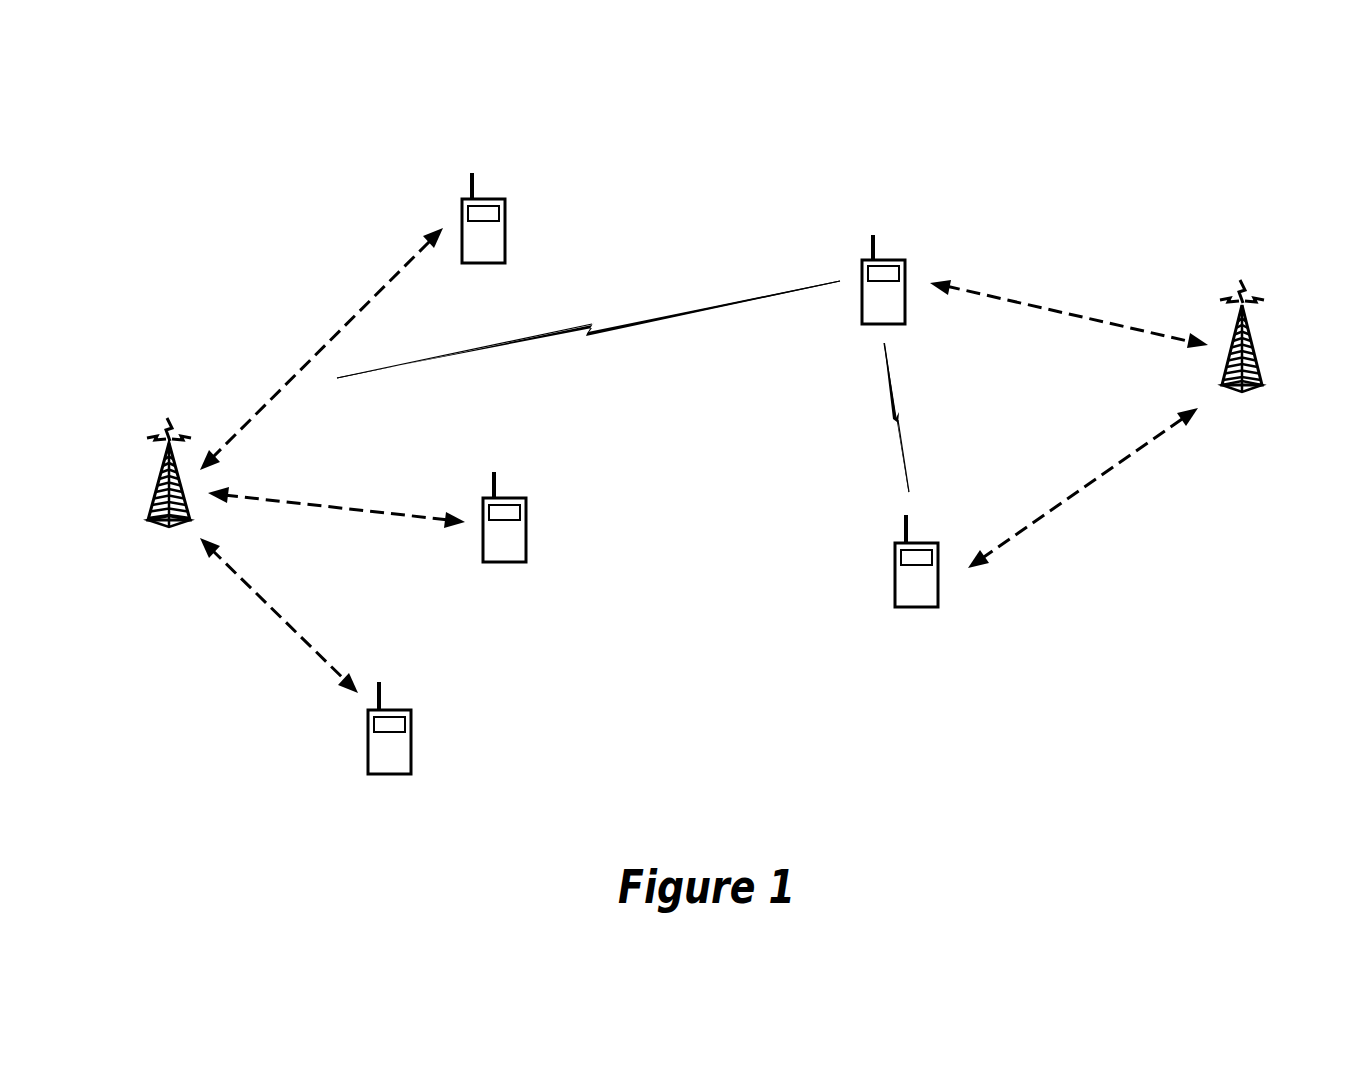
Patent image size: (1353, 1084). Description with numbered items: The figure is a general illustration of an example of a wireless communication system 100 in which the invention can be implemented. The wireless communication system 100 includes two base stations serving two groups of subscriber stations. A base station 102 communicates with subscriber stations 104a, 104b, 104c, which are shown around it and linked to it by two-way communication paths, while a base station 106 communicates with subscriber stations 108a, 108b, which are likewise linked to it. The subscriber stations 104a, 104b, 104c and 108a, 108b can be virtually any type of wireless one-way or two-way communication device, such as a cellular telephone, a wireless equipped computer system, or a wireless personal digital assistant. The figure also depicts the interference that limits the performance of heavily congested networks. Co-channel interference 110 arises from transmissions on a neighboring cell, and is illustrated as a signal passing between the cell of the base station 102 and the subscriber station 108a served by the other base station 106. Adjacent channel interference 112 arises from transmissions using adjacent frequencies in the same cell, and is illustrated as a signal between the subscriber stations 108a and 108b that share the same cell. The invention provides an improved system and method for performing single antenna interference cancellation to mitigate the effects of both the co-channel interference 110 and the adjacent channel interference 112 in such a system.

The wireless communication system 100 is at (220, 166).
The base station 102 is at (146, 516).
The subscriber station 104a is at (505, 238).
The subscriber station 104b is at (526, 550).
The subscriber station 104c is at (411, 750).
The base station 106 is at (1262, 370).
The subscriber station 108a is at (862, 313).
The subscriber station 108b is at (895, 591).
The co-channel interference 110 is at (627, 332).
The adjacent channel interference 112 is at (893, 418).